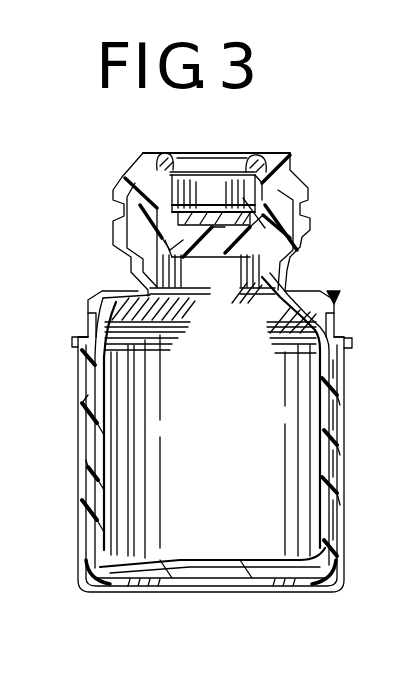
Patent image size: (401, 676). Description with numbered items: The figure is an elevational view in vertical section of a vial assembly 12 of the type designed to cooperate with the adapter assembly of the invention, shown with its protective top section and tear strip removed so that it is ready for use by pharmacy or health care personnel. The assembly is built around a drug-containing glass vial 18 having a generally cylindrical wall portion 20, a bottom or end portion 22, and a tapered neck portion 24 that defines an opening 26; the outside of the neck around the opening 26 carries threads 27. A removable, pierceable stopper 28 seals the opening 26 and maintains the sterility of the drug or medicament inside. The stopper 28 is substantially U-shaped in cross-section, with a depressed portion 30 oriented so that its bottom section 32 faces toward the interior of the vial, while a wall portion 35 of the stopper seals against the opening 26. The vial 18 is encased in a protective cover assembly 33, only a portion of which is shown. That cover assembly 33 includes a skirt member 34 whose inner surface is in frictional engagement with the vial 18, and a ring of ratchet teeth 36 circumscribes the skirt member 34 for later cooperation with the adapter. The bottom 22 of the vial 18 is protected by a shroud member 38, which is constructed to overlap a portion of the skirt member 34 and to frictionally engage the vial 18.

The vial assembly 12 is at (73, 412).
The glass vial 18 is at (96, 391).
The wall portion 20 is at (322, 412).
The bottom portion 22 is at (262, 568).
The tapered neck portion 24 is at (288, 222).
The opening 26 is at (155, 155).
The threads 27 is at (113, 192).
The stopper 28 is at (258, 154).
The depressed portion 30 is at (193, 178).
The bottom section 32 is at (255, 247).
The protective cover assembly 33 is at (75, 462).
The skirt member 34 is at (73, 336).
The wall portion 35 is at (260, 198).
The ratchet teeth 36 is at (350, 340).
The shroud member 38 is at (82, 533).